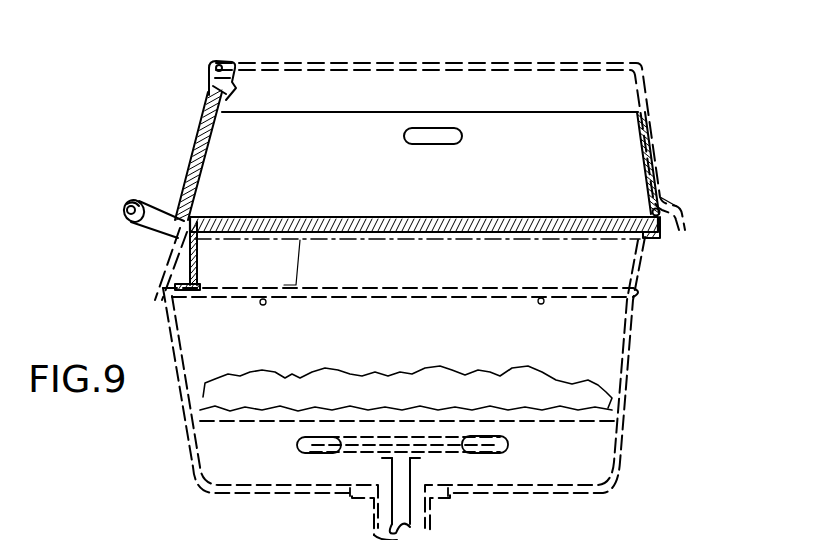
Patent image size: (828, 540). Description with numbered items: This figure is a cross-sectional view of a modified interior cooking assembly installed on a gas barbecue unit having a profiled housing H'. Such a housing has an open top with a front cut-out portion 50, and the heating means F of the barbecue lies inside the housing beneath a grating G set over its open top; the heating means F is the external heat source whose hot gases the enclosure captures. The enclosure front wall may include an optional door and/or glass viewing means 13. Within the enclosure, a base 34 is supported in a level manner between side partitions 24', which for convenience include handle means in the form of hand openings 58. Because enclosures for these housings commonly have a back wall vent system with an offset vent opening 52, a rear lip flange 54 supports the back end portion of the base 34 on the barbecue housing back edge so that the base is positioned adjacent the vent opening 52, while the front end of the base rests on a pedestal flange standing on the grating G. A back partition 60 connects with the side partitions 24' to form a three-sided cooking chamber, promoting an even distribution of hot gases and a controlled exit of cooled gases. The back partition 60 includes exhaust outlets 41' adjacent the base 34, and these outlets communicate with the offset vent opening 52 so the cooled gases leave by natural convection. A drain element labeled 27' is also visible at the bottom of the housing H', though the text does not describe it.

The glass viewing means 13 is at (198, 162).
The side partitions 24' is at (430, 95).
The hand openings 58 is at (446, 128).
The back partition 60 is at (640, 148).
The exhaust outlets 41' is at (617, 198).
The base 34 is at (415, 217).
The rear lip flange 54 is at (640, 236).
The offset vent opening 52 is at (666, 233).
The front cut-out portion 50 is at (306, 267).
The grating G is at (447, 290).
The profiled housing H' is at (424, 386).
The heating means F is at (384, 358).
The drain pipe 27' is at (506, 499).